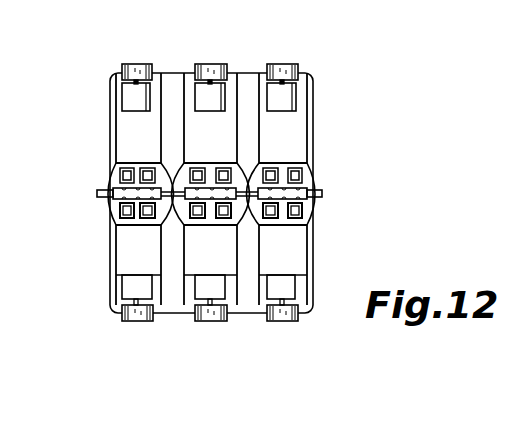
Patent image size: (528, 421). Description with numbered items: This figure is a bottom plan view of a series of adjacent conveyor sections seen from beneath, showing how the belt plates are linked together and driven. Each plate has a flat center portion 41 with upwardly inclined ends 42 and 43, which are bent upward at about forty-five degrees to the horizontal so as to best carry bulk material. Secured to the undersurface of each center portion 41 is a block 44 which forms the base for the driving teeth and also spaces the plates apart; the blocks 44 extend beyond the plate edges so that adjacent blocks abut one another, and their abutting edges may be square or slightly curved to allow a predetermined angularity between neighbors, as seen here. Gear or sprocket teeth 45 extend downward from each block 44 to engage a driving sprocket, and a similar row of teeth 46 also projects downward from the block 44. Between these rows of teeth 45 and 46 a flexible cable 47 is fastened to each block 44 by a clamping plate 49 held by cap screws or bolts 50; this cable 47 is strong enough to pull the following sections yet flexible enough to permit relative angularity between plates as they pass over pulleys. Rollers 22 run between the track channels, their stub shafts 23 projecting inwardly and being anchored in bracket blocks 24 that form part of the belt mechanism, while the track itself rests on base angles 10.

The base angles 10 is at (118, 121).
The rollers 22 is at (134, 64).
The stub shafts 23 is at (138, 80).
The bracket blocks 24 is at (127, 93).
The flat center portion 41 is at (120, 257).
The upwardly inclined end 42 is at (116, 80).
The upwardly inclined end 43 is at (122, 290).
The block 44 is at (137, 163).
The gear or sprocket teeth 45 is at (193, 218).
The row of teeth 46 is at (140, 178).
The cable 47 is at (97, 193).
The clamping plate 49 is at (306, 186).
The cap screws 50 is at (143, 214).